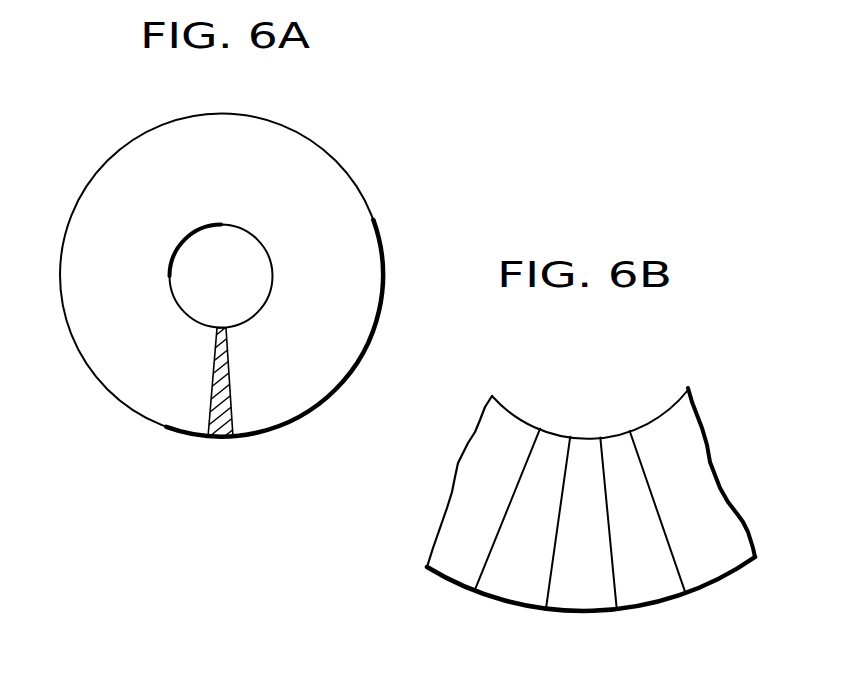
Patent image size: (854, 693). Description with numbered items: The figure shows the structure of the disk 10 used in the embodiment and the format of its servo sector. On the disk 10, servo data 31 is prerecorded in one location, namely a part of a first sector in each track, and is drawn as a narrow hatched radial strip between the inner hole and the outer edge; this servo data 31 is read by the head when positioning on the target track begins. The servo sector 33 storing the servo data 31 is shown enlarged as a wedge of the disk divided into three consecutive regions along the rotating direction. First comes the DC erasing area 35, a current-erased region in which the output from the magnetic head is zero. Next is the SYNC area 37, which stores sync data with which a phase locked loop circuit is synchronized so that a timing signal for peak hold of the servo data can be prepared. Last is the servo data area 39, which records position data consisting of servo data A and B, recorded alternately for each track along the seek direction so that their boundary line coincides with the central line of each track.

In FIG. 6A, the disk 10 is at (161, 422).
In FIG. 6A, the servo data 31 is at (217, 439).
In FIG. 6B, the servo sector 33 is at (591, 524).
In FIG. 6B, the DC erasing area 35 is at (550, 443).
In FIG. 6B, the SYNC area 37 is at (585, 445).
In FIG. 6B, the servo data area 39 is at (617, 445).